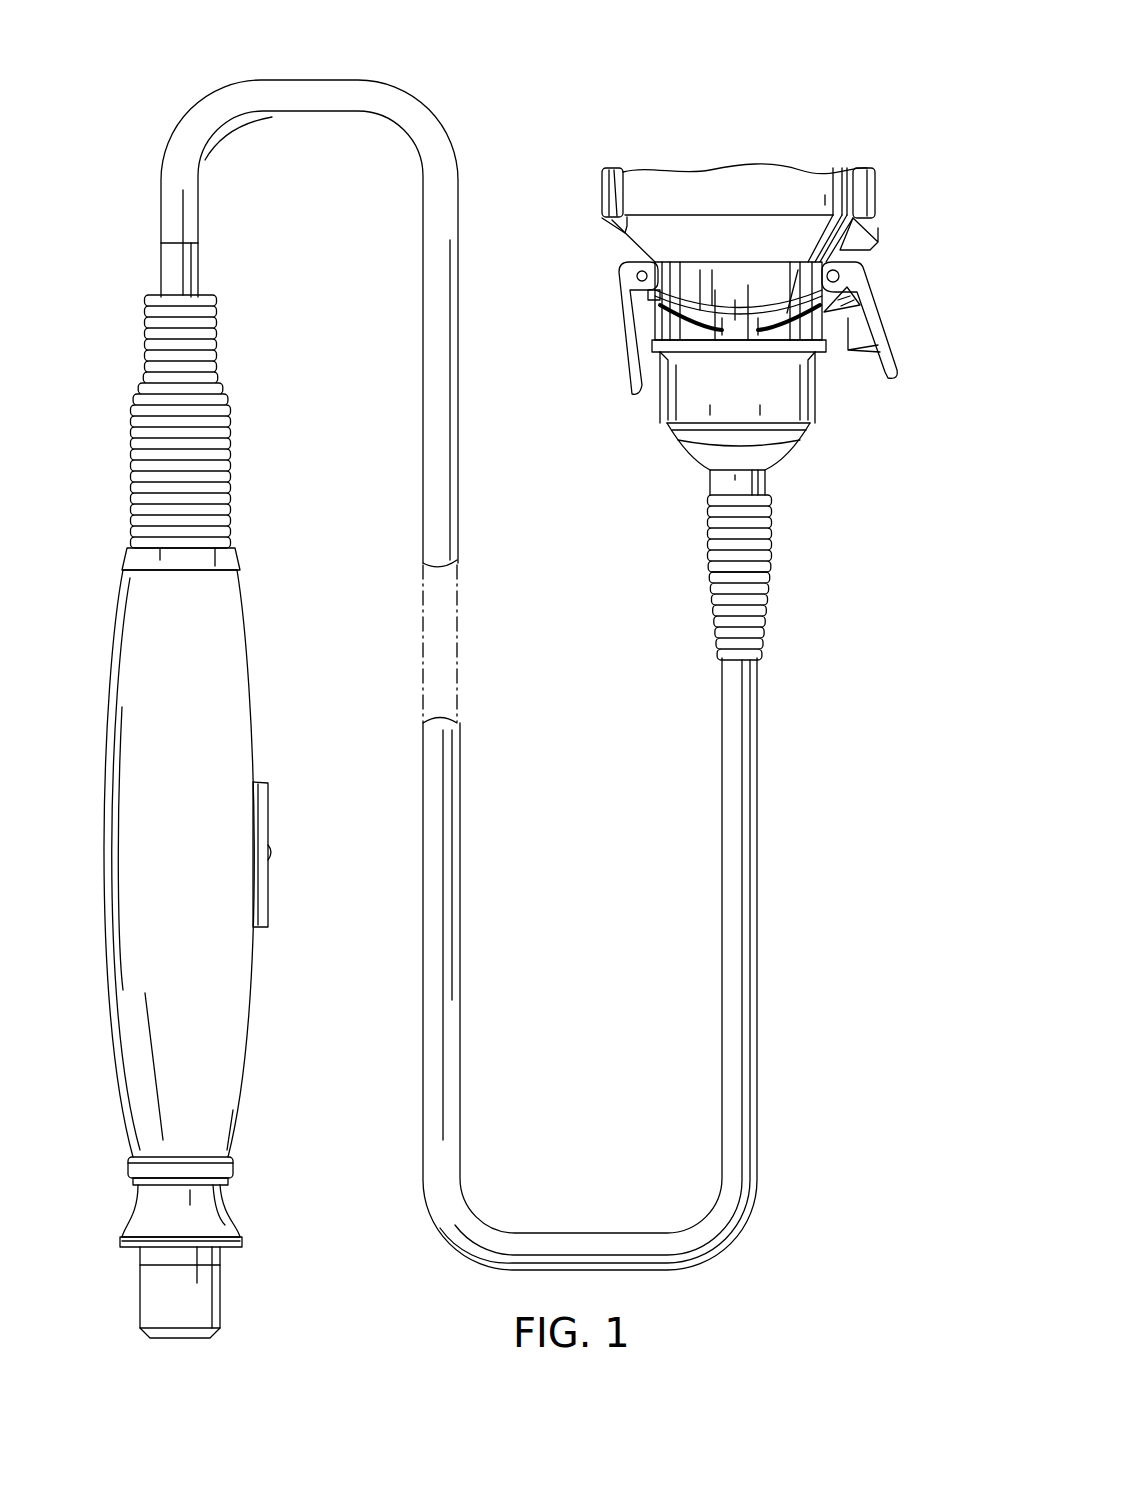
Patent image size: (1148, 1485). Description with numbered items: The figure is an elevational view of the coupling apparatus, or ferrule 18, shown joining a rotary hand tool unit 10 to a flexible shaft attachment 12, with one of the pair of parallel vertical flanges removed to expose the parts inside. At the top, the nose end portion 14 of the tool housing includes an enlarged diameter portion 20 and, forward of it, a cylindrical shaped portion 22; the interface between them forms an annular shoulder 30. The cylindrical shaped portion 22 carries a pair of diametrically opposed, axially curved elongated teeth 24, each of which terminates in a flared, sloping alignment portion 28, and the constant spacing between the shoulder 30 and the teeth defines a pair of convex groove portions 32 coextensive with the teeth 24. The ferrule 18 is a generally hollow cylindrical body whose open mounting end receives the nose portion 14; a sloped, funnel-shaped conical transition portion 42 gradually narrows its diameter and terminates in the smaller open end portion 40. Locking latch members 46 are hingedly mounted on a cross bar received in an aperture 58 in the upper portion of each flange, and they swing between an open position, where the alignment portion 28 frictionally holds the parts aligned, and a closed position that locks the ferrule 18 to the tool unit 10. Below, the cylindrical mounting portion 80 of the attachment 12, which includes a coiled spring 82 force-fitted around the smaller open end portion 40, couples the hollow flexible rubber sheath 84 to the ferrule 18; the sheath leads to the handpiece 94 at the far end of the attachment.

The rotary hand tool unit 10 is at (786, 141).
The flexible shaft attachment 12 is at (133, 112).
The nose end portion 14 is at (797, 281).
The ferrule 18 is at (836, 428).
The enlarged diameter portion 20 is at (662, 300).
The cylindrical shaped portion 22 is at (670, 333).
The elongated teeth 24 is at (785, 340).
The alignment portion 28 is at (718, 340).
The annular shoulder 30 is at (712, 300).
The convex groove portions 32 is at (787, 313).
The smaller open end portion 40 is at (768, 486).
The conical transition portion 42 is at (685, 442).
The locking latch members 46 is at (898, 353).
The aperture 58 is at (636, 272).
The mounting portion 80 is at (707, 525).
The coiled spring 82 is at (774, 578).
The flexible rubber sheath 84 is at (736, 1232).
The handpiece 94 is at (272, 708).